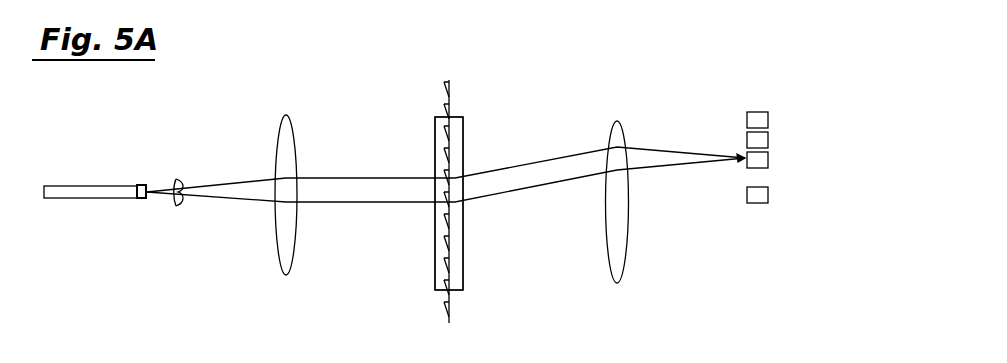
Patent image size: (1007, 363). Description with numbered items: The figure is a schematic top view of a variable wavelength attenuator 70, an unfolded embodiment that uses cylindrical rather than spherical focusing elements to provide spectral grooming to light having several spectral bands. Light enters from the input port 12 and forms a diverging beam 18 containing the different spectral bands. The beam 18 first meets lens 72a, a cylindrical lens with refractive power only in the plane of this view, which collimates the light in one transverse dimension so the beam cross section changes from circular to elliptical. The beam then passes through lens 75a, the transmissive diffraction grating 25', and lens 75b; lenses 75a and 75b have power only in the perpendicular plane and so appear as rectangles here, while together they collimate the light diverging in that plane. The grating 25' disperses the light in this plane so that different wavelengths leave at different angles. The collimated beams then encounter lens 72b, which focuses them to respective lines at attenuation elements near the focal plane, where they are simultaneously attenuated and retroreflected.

The input port 12 is at (137, 185).
The diverging beam 18 is at (178, 172).
The variable wavelength attenuator 70 is at (240, 226).
The lens 72a is at (297, 148).
The lens 72b is at (618, 132).
The lens 75a is at (438, 118).
The lens 75b is at (458, 118).
The transmissive diffraction grating 25' is at (482, 219).